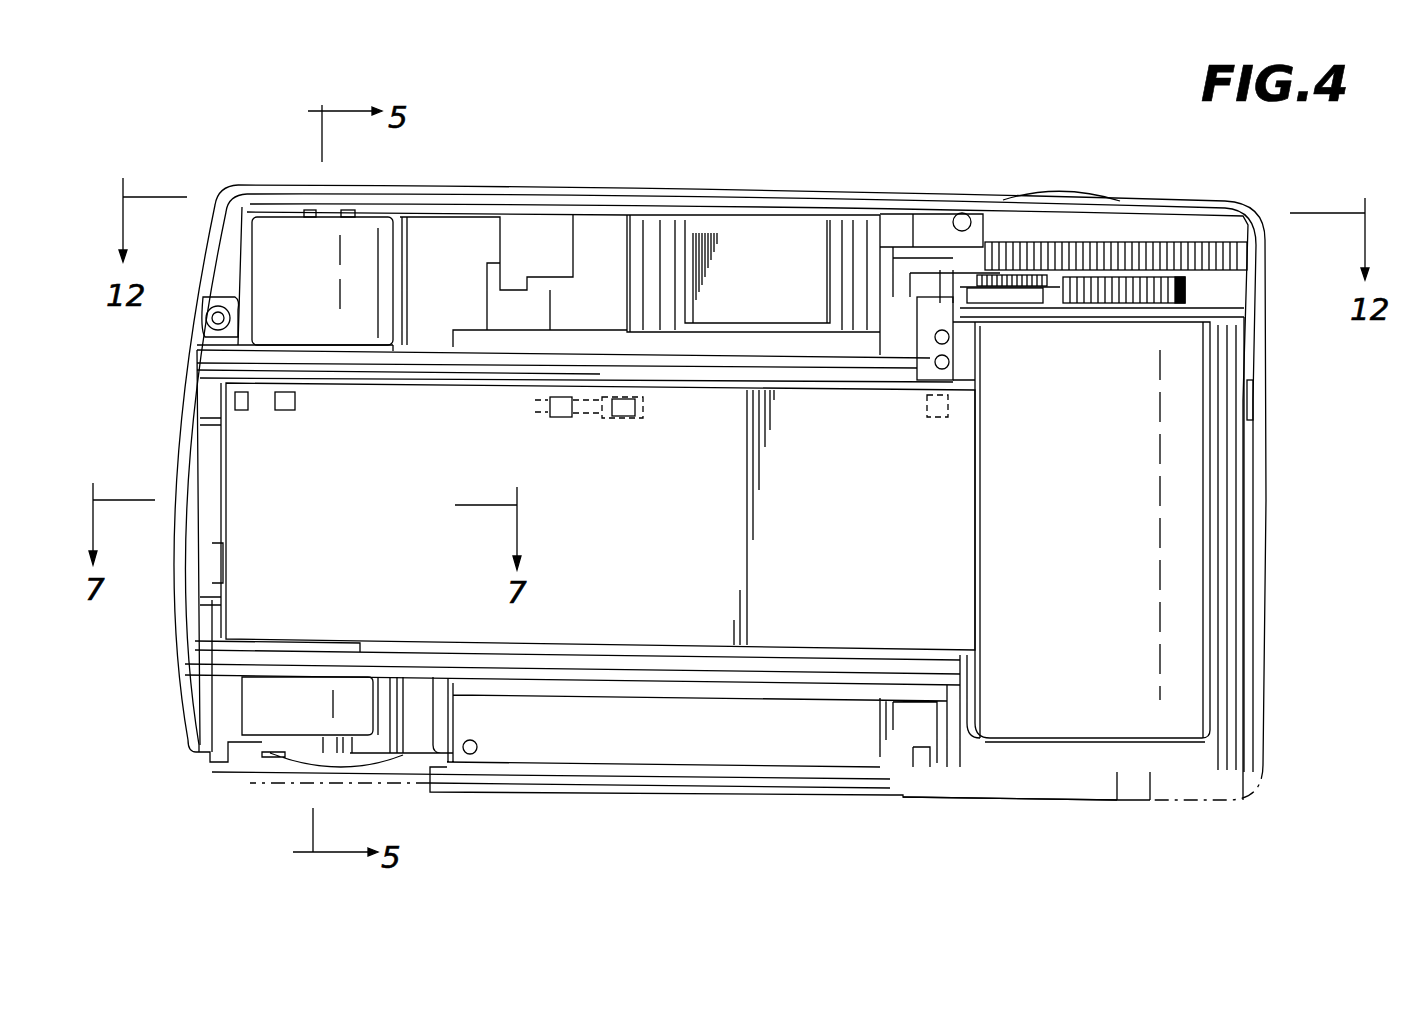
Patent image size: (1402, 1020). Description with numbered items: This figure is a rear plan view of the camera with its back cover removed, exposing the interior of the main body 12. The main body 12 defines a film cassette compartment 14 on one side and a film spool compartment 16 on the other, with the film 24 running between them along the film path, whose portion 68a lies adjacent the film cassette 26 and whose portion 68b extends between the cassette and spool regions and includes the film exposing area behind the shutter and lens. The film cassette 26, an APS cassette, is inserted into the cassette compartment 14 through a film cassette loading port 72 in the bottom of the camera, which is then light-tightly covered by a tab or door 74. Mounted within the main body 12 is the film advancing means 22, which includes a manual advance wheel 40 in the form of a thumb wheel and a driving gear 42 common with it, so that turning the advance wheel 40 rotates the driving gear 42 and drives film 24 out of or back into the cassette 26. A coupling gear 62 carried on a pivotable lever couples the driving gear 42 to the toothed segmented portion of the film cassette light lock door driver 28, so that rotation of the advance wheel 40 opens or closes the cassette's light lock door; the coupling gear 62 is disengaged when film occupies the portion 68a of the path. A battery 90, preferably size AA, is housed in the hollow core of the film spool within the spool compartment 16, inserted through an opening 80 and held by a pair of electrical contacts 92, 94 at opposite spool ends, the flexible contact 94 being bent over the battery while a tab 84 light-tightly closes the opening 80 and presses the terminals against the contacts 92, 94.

The main body 12 is at (548, 192).
The film cassette compartment 14 is at (1228, 510).
The film spool compartment 16 is at (208, 470).
The film advancing means 22 is at (1196, 232).
The film 24 is at (665, 498).
The film cassette 26 is at (1106, 498).
The film cassette light lock door driver 28 is at (993, 297).
The manual advance wheel 40 is at (1217, 258).
The driving gear 42 is at (1187, 283).
The coupling gear 62 is at (1030, 287).
The film path portion adjacent the film cassette 68a is at (953, 400).
The film path portion extending between cassette and spool portions 68b is at (548, 648).
The film cassette loading port 72 is at (1150, 746).
The tab or door 74 is at (1070, 790).
The opening 80 is at (242, 752).
The tab 84 is at (398, 780).
The battery 90 is at (322, 277).
The electrical contact 92 is at (393, 210).
The electrical contact 94 is at (270, 755).